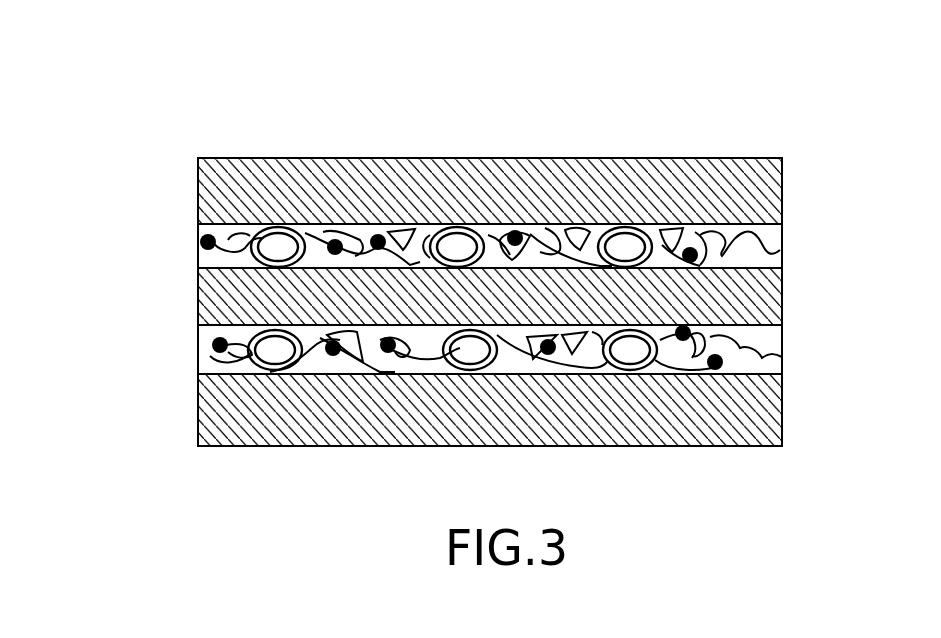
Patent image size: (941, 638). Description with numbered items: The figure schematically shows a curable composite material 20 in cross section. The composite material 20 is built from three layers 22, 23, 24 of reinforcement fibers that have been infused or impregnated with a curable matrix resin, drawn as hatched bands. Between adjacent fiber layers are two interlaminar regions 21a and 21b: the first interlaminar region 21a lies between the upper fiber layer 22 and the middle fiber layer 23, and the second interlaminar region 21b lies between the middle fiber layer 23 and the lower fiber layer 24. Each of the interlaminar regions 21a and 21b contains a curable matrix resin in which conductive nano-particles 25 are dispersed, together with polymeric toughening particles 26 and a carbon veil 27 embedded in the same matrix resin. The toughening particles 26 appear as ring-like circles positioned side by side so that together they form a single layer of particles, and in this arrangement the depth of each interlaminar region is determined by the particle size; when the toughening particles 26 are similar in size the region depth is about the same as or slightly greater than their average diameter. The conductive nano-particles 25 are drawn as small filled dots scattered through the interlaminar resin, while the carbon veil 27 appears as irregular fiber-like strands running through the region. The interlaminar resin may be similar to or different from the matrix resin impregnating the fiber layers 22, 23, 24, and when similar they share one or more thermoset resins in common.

The curable composite material 20 is at (240, 110).
The layer of reinforcement fibers 22 is at (190, 192).
The interlaminar region 21a is at (461, 173).
The layer of reinforcement fibers 23 is at (190, 297).
The interlaminar region 21b is at (455, 350).
The layer of reinforcement fibers 24 is at (196, 420).
The polymeric toughening particles 26 is at (630, 223).
The carbon veil 27 is at (783, 245).
The conductive nano-particles 25 is at (733, 357).